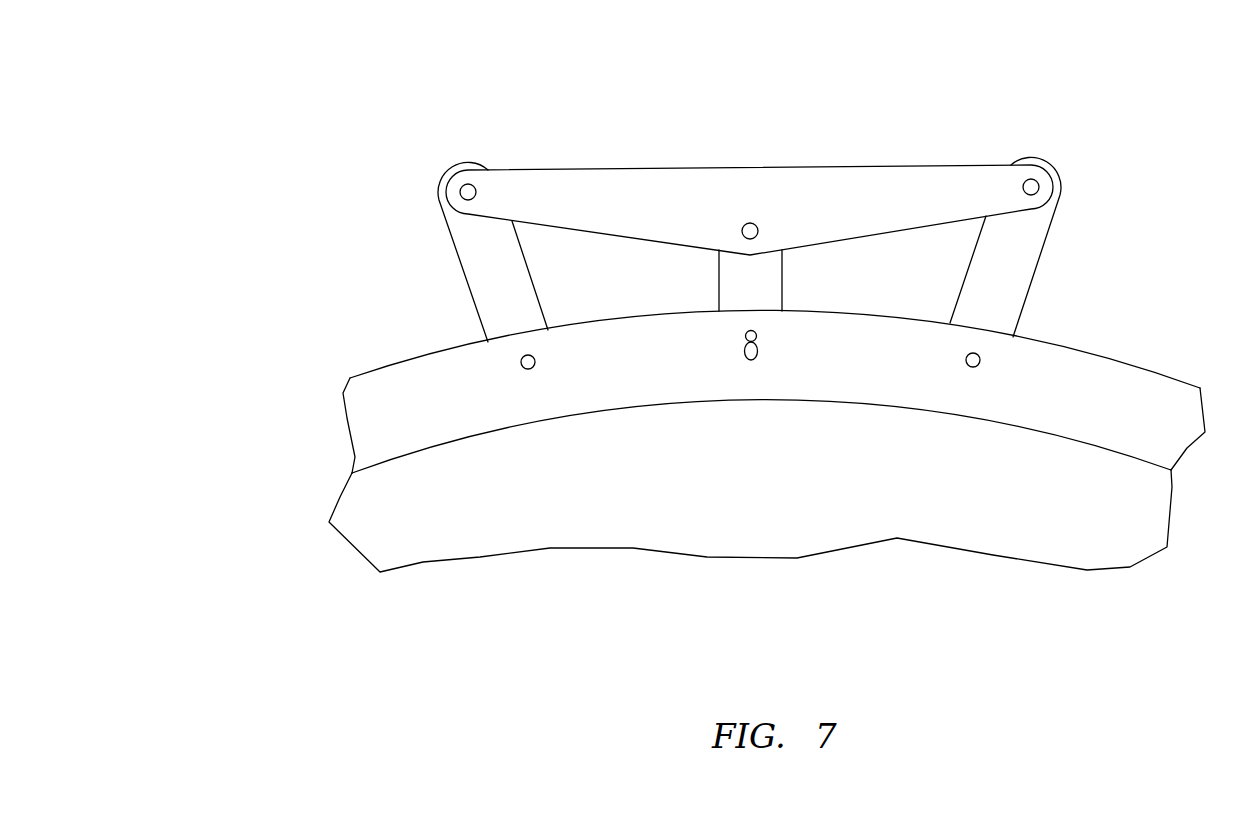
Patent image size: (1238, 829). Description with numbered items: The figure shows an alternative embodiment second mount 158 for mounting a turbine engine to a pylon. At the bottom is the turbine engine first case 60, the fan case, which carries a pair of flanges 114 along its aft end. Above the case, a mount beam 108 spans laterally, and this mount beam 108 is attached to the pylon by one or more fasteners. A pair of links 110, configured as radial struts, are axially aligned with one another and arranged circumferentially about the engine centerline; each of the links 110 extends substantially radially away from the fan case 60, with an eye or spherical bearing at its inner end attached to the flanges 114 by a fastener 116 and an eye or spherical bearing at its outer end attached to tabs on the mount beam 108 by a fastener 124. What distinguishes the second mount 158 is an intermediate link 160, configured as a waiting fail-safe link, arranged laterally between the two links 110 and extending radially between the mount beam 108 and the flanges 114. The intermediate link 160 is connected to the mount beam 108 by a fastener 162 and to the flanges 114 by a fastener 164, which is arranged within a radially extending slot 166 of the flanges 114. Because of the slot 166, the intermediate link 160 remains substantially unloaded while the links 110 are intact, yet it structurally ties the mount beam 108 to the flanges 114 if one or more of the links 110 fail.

The turbine engine first case 60 is at (373, 545).
The mount beam 108 is at (637, 167).
The links 110 is at (465, 284).
The flanges 114 is at (347, 418).
The fastener 116 is at (521, 365).
The fastener 124 is at (459, 192).
The second mount 158 is at (899, 141).
The intermediate link 160 is at (782, 283).
The fastener 162 is at (758, 229).
The fastener 164 is at (757, 343).
The radially extending slot 166 is at (748, 359).